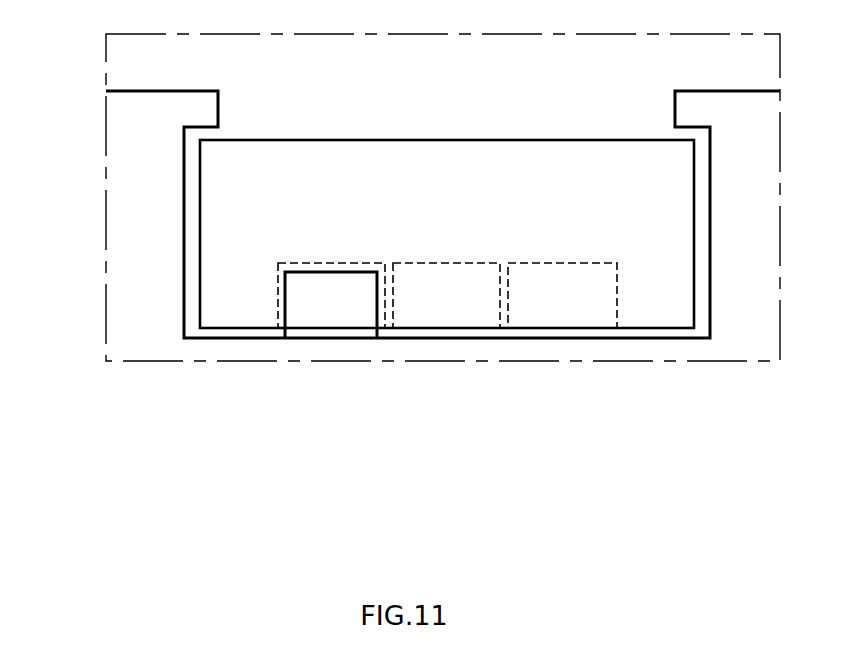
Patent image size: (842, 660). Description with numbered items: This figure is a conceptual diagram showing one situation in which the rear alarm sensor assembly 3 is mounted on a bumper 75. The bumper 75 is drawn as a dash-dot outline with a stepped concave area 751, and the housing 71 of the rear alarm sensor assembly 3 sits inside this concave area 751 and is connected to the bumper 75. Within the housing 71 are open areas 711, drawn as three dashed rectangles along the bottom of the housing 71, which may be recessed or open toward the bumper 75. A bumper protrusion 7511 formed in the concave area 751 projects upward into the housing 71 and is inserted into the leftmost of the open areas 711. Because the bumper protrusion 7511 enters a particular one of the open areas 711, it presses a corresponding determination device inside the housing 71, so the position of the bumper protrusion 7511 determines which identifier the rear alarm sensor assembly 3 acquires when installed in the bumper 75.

The rear alarm sensor assembly 3 is at (408, 242).
The housing 71 is at (538, 148).
The open areas 711 is at (557, 263).
The bumper 75 is at (132, 257).
The concave area 751 is at (192, 311).
The bumper protrusion 7511 is at (332, 315).